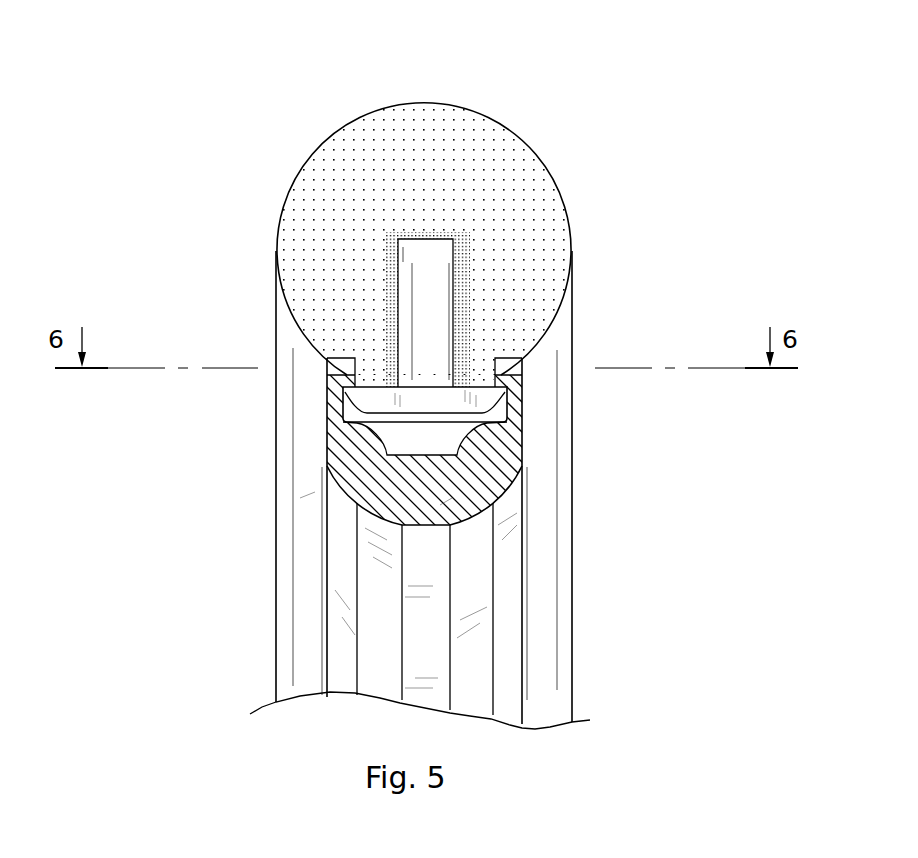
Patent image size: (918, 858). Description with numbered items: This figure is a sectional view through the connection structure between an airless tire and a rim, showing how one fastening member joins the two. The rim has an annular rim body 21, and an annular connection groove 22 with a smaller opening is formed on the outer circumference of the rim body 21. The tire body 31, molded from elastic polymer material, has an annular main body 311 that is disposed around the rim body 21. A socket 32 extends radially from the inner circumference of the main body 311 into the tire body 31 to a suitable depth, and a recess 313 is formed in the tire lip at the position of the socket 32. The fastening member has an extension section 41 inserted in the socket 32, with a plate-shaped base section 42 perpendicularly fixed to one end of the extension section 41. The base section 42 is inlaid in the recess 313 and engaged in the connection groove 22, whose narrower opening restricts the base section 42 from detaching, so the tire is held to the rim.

The rim body 21 is at (494, 465).
The connection groove 22 is at (418, 443).
The tire body 31 is at (312, 104).
The main body 311 is at (515, 158).
The socket 32 is at (462, 275).
The recess 313 is at (494, 415).
The extension section 41 is at (413, 278).
The base section 42 is at (372, 401).